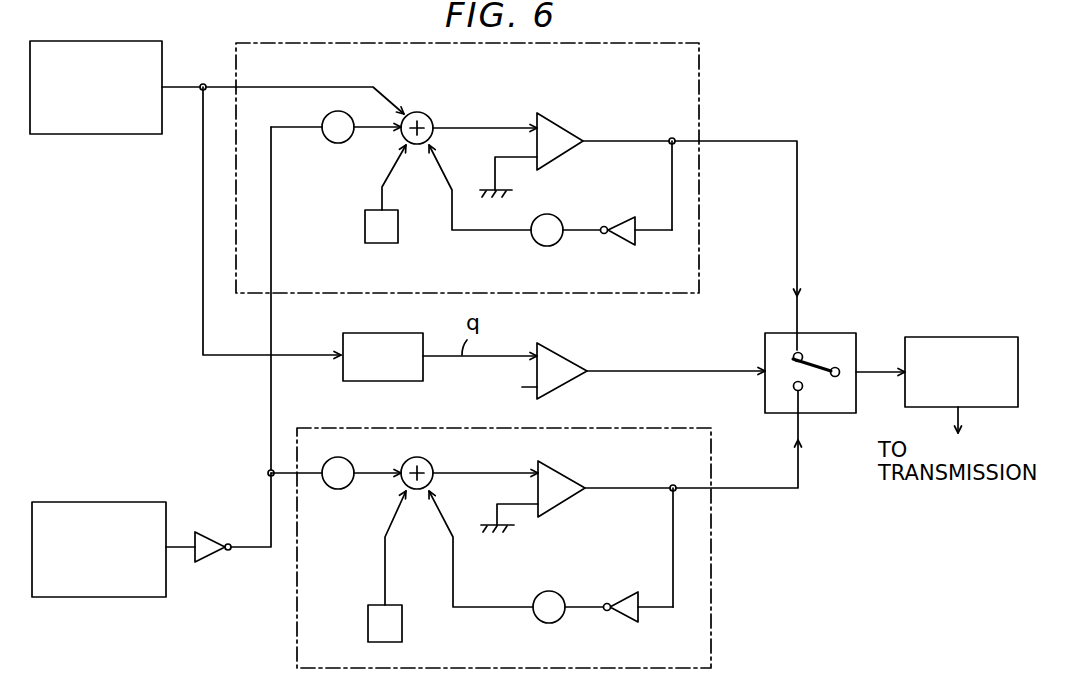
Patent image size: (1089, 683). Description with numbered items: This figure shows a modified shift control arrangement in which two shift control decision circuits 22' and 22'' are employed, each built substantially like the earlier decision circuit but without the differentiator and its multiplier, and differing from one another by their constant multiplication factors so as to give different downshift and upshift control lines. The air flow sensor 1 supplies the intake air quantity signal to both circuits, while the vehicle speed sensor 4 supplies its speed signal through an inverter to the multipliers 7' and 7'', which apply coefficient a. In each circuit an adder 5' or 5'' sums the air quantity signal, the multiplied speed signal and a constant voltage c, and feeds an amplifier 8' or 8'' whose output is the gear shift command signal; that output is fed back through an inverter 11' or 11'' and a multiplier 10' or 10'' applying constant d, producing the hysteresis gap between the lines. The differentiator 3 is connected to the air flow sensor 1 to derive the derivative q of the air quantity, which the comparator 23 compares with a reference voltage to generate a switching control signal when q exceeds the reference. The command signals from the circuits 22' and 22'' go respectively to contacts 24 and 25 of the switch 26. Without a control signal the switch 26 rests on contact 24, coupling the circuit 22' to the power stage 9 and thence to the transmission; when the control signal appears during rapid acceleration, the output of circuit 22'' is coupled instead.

The air flow sensor 1 is at (138, 136).
The vehicle speed sensor 4 is at (157, 503).
The differentiator 3 is at (408, 333).
The comparator 23 is at (563, 357).
The contact 24 is at (803, 353).
The contact 25 is at (803, 389).
The switch 26 is at (835, 373).
The power stage 9 is at (976, 337).
The shift control decision circuit 22' is at (518, 196).
The shift control decision circuit 22'' is at (540, 548).
The adder 5' is at (432, 114).
The adder 5'' is at (433, 459).
The multiplier 7' is at (330, 144).
The multiplier 7'' is at (348, 458).
The amplifier 8' is at (541, 149).
The amplifier 8'' is at (544, 489).
The multiplier 10' is at (562, 214).
The multiplier 10'' is at (565, 585).
The inverter 11' is at (637, 211).
The inverter 11'' is at (639, 582).